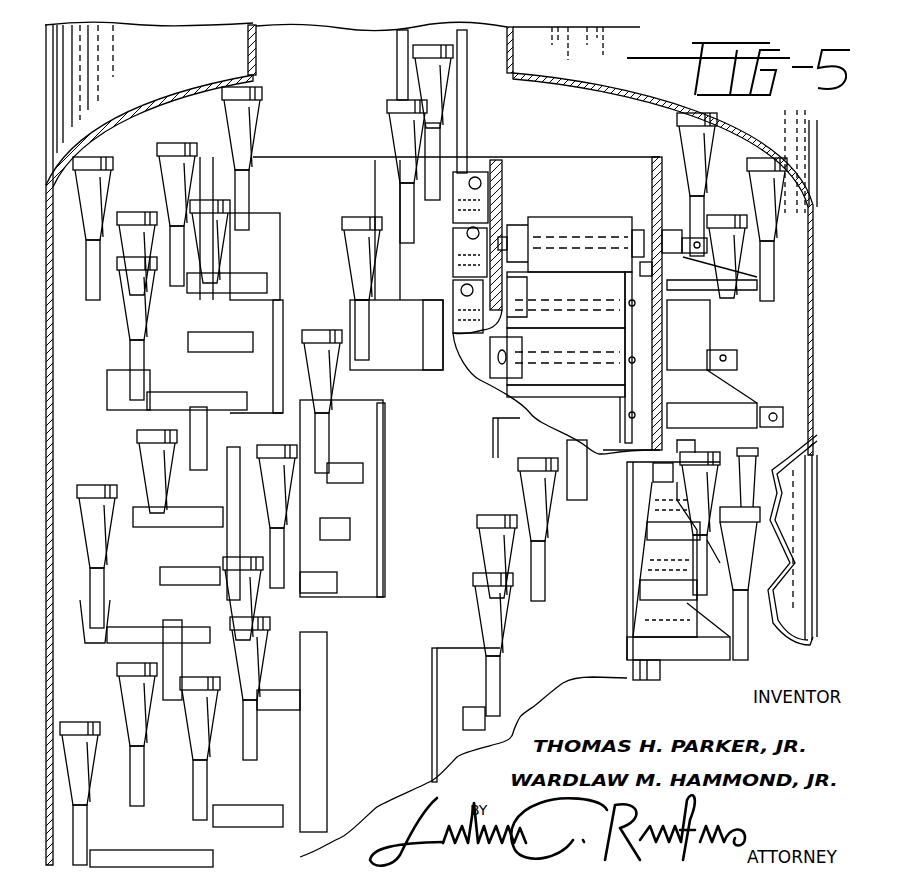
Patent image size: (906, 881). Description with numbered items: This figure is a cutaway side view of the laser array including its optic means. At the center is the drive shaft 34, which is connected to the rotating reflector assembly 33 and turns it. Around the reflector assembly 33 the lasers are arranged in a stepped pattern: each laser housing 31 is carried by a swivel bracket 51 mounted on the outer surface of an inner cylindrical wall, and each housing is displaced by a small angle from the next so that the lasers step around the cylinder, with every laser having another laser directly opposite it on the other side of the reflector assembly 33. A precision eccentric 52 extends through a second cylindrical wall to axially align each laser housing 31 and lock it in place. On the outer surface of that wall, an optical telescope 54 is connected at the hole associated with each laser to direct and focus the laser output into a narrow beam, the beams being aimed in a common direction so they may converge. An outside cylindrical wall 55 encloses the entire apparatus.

The laser housing 31 is at (577, 230).
The rotating reflector assembly 33 is at (480, 160).
The drive shaft 34 is at (397, 75).
The swivel bracket 51 is at (508, 227).
The precision eccentric 52 is at (713, 273).
The optical telescope 54 is at (780, 193).
The outside cylindrical wall 55 is at (845, 430).